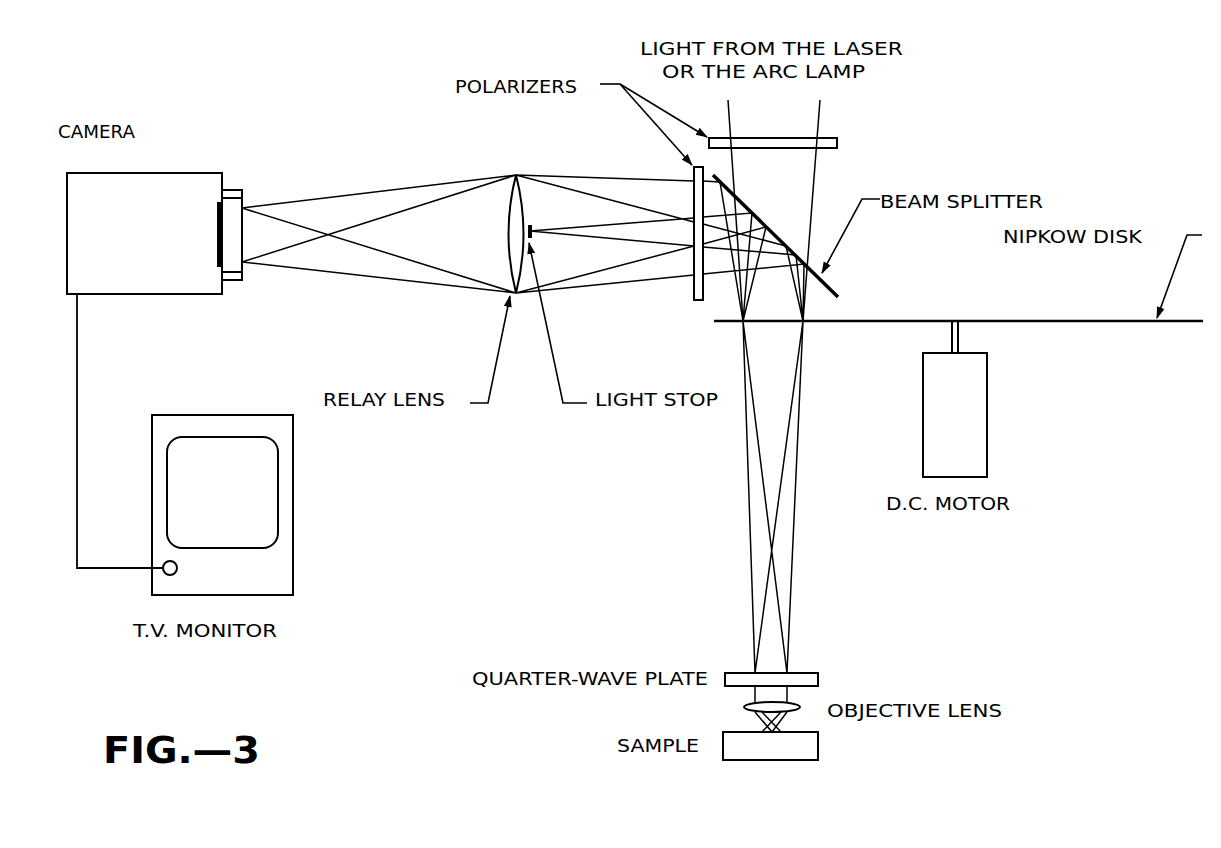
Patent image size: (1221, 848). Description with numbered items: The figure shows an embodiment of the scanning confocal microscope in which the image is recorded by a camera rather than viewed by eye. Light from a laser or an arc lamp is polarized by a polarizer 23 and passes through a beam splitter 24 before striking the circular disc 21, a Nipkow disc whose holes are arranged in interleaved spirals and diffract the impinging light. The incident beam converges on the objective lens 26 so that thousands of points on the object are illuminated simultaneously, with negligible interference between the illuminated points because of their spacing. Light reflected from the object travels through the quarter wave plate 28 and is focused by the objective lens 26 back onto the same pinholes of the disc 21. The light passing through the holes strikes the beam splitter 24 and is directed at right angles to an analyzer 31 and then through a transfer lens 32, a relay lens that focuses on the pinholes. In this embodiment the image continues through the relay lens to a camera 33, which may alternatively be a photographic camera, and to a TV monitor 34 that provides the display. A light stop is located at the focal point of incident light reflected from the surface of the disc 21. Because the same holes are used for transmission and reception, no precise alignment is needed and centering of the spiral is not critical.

The circular disc 21 is at (1005, 320).
The polarizer 23 is at (836, 138).
The beam splitter 24 is at (836, 296).
The objective lens 26 is at (800, 706).
The quarter wave plate 28 is at (818, 672).
The analyzer 31 is at (693, 293).
The transfer lens 32 is at (508, 207).
The camera 33 is at (210, 178).
The TV monitor 34 is at (275, 422).